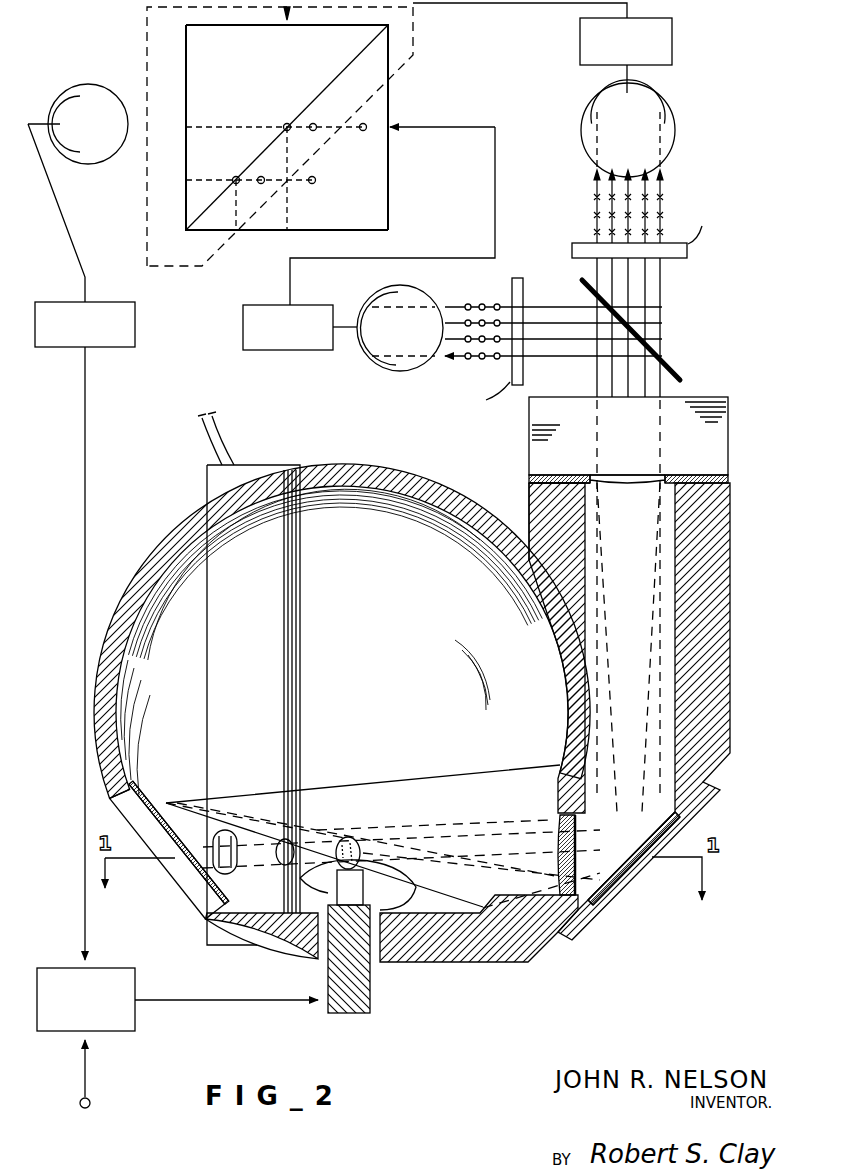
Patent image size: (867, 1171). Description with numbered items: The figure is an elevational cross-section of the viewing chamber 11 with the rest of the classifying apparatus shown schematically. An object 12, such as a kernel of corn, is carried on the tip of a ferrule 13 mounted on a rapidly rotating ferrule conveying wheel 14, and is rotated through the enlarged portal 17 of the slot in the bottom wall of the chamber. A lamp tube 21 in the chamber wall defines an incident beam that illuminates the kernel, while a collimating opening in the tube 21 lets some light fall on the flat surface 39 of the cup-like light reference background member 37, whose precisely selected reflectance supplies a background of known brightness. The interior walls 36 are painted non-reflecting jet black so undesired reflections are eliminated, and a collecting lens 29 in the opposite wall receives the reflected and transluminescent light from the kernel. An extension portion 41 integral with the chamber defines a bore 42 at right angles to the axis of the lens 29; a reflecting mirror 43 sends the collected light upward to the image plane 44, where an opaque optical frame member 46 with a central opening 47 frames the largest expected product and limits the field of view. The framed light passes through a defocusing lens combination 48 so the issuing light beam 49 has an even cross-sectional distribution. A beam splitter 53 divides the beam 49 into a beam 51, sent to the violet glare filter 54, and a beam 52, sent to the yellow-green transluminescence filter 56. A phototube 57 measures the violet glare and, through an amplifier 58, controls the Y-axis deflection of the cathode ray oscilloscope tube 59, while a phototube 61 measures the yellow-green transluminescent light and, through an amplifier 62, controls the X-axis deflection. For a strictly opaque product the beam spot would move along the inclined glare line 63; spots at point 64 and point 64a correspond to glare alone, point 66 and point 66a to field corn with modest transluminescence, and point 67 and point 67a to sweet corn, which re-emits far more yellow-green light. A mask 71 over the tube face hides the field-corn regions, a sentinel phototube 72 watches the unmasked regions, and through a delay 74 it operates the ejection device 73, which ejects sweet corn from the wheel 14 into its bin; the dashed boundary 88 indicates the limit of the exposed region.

The viewing chamber 11 is at (420, 480).
The object 12 is at (346, 838).
The ferrule 13 is at (362, 868).
The ferrule conveying wheel 14 is at (371, 991).
The portal 17 is at (414, 886).
The tube 21 is at (301, 603).
The collecting lens 29 is at (586, 888).
The interior walls 36 is at (412, 611).
The light reference background member 37 is at (177, 866).
The flat surface 39 is at (168, 808).
The extension portion 41 is at (731, 586).
The bore 42 is at (668, 542).
The reflecting mirror 43 is at (643, 830).
The image plane 44 is at (645, 477).
The optical frame member 46 is at (556, 470).
The central opening 47 is at (600, 483).
The defocusing lens combination 48 is at (730, 452).
The light beam 49 is at (592, 391).
The beam 51 is at (650, 284).
The beam 52 is at (556, 322).
The beam splitter 53 is at (672, 364).
The glare filter 54 is at (580, 243).
The transluminescence filter 56 is at (524, 282).
The phototube 57 is at (583, 118).
The amplifier 58 is at (580, 42).
The cathode ray oscilloscope tube 59 is at (390, 200).
The phototube 61 is at (364, 357).
The amplifier 62 is at (243, 327).
The glare line 63 is at (323, 93).
The point 64 is at (236, 178).
The point 64a is at (285, 125).
The point 66 is at (262, 184).
The point 66a is at (315, 130).
The point 67 is at (313, 184).
The point 67a is at (363, 124).
The mask 71 is at (147, 24).
The sentinel phototube 72 is at (110, 84).
The ejection device 73 is at (136, 978).
The delay 74 is at (105, 302).
The limit line 88 is at (401, 67).